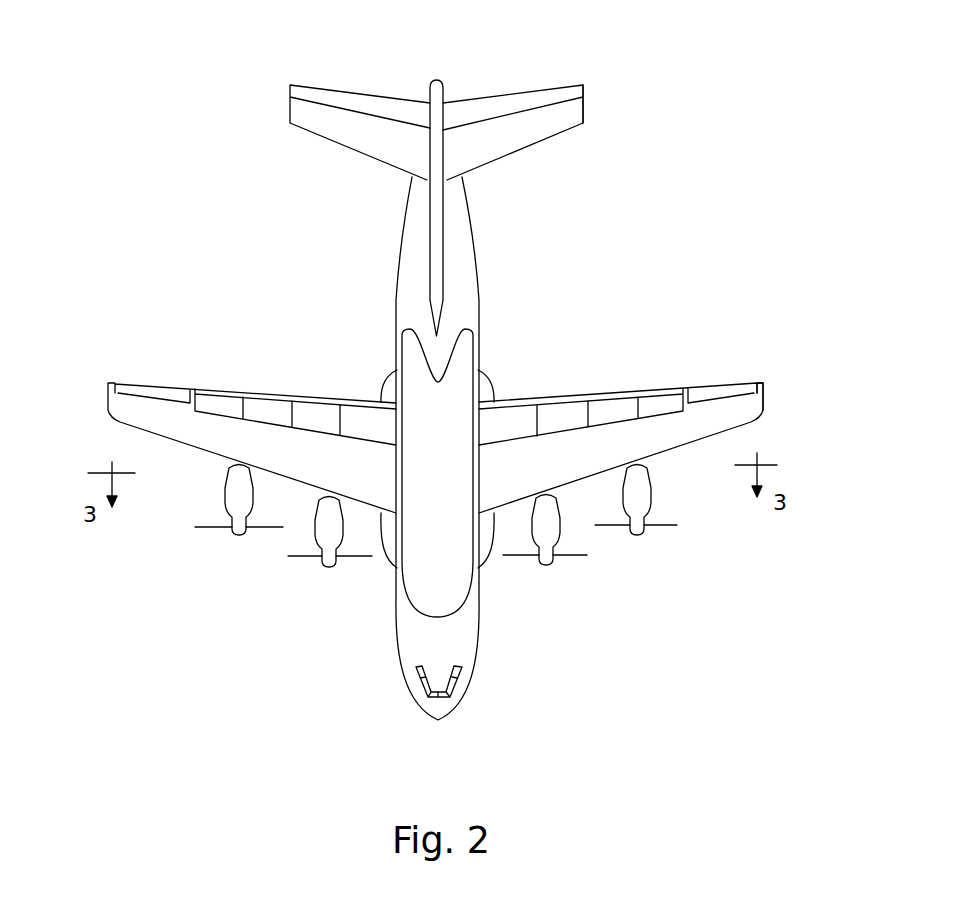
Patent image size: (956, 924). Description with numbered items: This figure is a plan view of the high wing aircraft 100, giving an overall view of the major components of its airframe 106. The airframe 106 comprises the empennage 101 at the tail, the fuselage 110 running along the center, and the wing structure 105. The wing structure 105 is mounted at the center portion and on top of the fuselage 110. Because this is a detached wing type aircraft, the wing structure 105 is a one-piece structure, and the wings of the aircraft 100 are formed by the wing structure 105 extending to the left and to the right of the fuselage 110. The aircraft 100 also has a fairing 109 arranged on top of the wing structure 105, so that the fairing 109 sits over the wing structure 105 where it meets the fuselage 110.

The high wing aircraft 100 is at (461, 364).
The empennage 101 is at (468, 88).
The wing structure 105 is at (215, 433).
The airframe 106 is at (480, 255).
The fairing 109 is at (440, 585).
The fuselage 110 is at (390, 262).